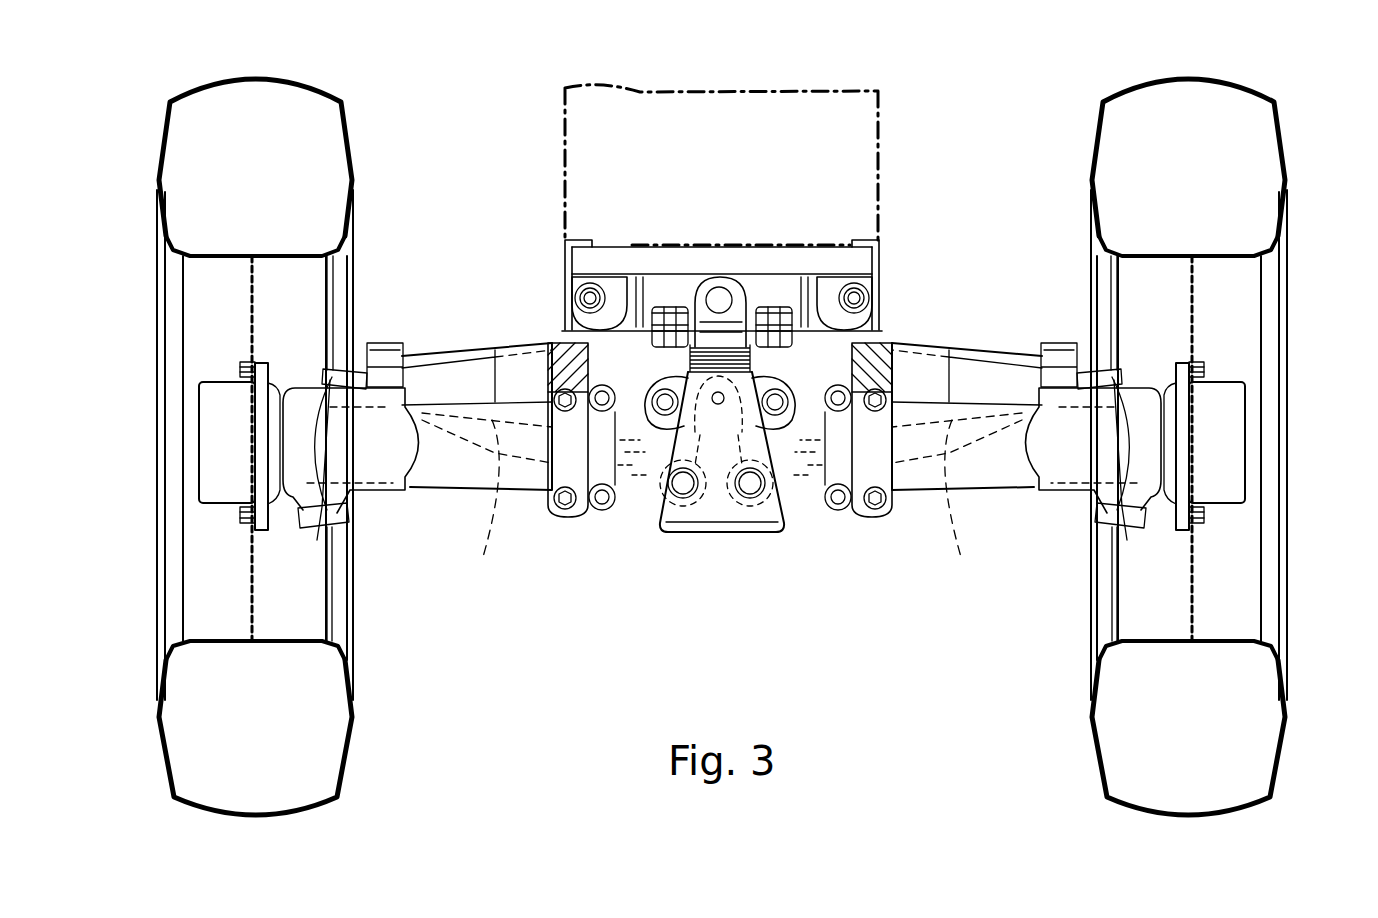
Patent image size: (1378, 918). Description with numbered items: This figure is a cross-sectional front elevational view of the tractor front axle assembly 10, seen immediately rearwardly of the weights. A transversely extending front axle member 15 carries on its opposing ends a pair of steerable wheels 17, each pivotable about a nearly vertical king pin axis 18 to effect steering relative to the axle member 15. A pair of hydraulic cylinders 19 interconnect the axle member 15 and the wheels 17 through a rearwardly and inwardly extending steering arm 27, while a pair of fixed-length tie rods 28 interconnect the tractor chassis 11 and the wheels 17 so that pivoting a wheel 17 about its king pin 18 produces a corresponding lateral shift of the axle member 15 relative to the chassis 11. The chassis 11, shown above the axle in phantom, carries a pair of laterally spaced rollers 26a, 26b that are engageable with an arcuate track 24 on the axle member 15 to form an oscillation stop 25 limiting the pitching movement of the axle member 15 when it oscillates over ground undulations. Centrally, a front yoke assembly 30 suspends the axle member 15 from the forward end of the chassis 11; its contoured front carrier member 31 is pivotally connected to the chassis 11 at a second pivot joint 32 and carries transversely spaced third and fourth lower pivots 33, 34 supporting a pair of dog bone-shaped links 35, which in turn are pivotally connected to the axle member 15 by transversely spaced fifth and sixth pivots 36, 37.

The front axle assembly 10 is at (988, 103).
The tractor chassis 11 is at (703, 92).
The front axle member 15 is at (448, 473).
The steerable wheels 17 is at (222, 80).
The king pin axes 18 is at (310, 537).
The hydraulic cylinders 19 is at (483, 557).
The arcuate track 24 is at (800, 345).
The oscillation stop 25 is at (898, 292).
The roller 26a is at (867, 320).
The roller 26b is at (630, 310).
The steering arm 27 is at (330, 368).
The tie rods 28 is at (445, 335).
The front yoke assembly 30 is at (774, 534).
The front carrier member 31 is at (785, 523).
The second pivot joint 32 is at (718, 290).
The third lower pivot 33 is at (713, 535).
The fourth lower pivot 34 is at (680, 504).
The dog bone-shaped links 35 is at (595, 400).
The fifth pivot 36 is at (785, 335).
The sixth pivot 37 is at (557, 345).